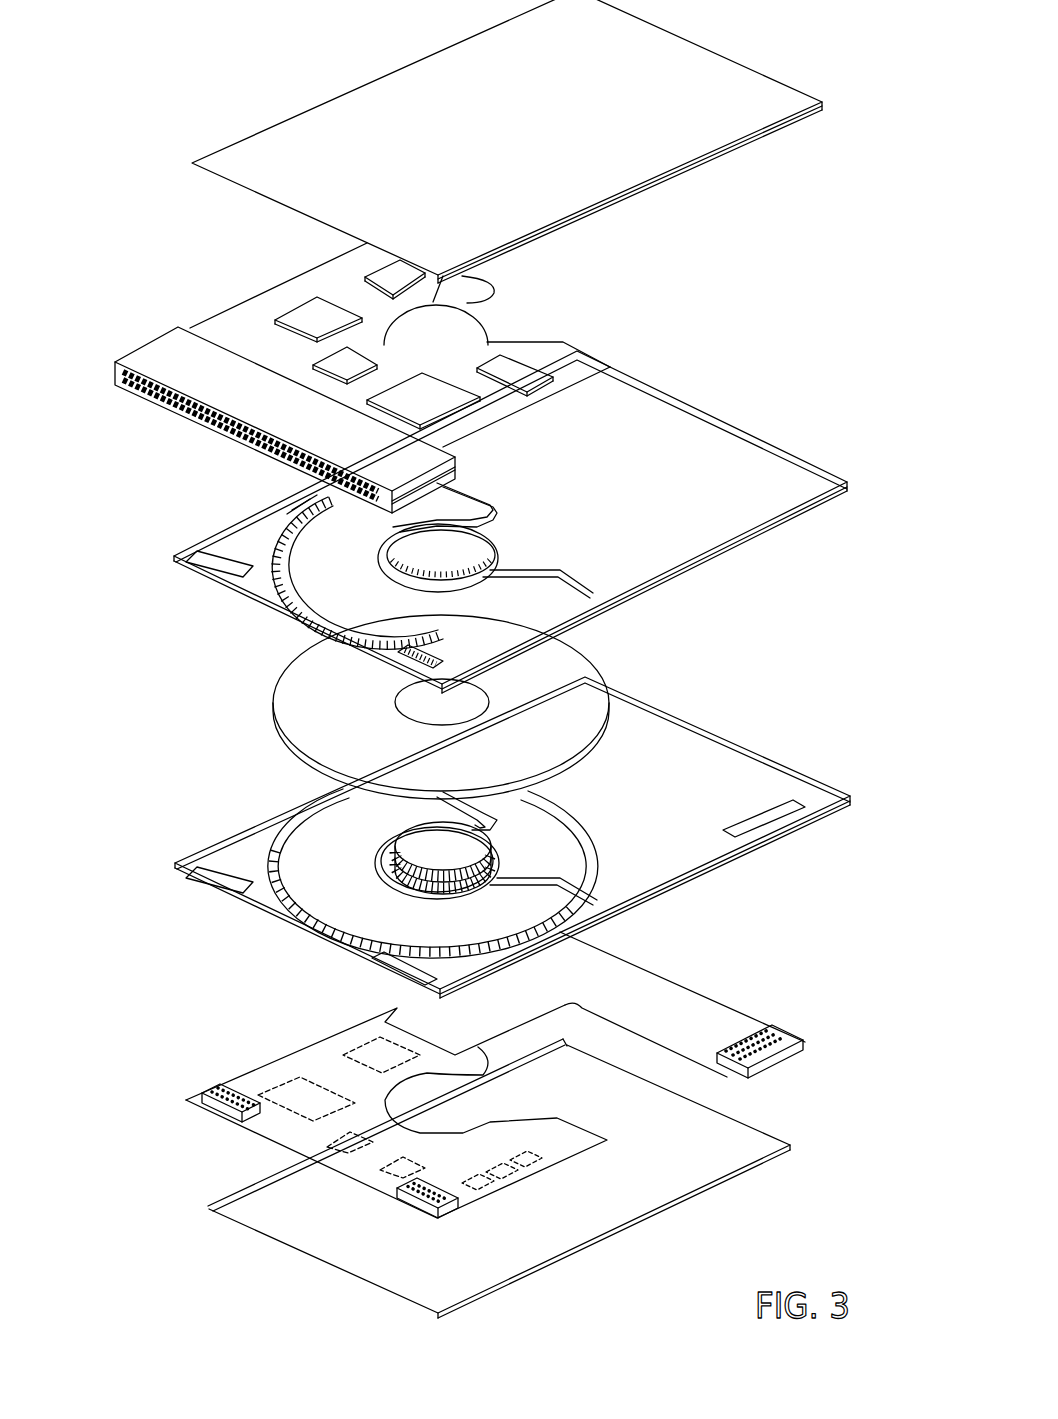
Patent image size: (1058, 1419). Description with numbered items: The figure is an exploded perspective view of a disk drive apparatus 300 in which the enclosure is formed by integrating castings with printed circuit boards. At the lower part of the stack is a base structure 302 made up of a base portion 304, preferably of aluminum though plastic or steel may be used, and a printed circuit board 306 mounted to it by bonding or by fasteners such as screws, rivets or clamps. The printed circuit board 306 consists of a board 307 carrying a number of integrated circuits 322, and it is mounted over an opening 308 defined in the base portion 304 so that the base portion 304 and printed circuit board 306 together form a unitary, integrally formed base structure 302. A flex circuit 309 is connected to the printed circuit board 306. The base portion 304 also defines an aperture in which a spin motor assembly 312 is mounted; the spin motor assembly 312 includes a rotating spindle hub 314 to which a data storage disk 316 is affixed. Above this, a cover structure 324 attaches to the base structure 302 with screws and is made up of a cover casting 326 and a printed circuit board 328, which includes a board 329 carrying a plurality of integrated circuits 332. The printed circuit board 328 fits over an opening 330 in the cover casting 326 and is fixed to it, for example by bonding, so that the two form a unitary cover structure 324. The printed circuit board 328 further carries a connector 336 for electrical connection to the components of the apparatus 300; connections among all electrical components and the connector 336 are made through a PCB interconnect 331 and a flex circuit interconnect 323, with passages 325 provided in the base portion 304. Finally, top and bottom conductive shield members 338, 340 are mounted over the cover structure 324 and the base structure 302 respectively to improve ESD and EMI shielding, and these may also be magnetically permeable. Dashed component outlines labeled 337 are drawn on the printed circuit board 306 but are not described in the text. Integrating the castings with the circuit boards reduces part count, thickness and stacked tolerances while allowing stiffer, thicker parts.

The disk drive apparatus 300 is at (833, 381).
The base structure 302 is at (800, 704).
The base portion 304 is at (770, 773).
The printed circuit board 306 is at (262, 1081).
The board 307 is at (273, 1135).
The opening 308 is at (292, 890).
The flex circuit 309 is at (712, 1004).
The spin motor assembly 312 is at (386, 878).
The rotating spindle hub 314 is at (472, 848).
The data storage disk 316 is at (585, 672).
The integrated circuits 322 is at (352, 1050).
The flex circuit interconnect 323 is at (796, 1028).
The cover structure 324 is at (715, 346).
The passages 325 is at (215, 556).
The cover casting 326 is at (776, 468).
The printed circuit board 328 is at (524, 340).
The board 329 is at (582, 361).
The opening 330 is at (290, 520).
The PCB interconnect 331 is at (206, 1094).
The integrated circuits 332 is at (500, 358).
The connector 336 is at (146, 352).
The component pad 337 is at (535, 1160).
The top conductive shield member 338 is at (760, 1143).
The bottom conductive shield member 340 is at (664, 166).